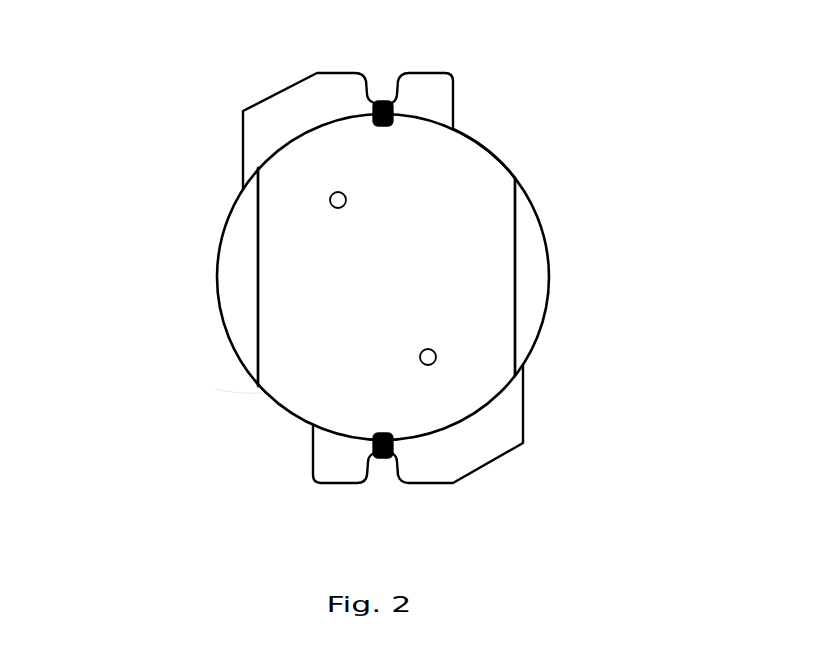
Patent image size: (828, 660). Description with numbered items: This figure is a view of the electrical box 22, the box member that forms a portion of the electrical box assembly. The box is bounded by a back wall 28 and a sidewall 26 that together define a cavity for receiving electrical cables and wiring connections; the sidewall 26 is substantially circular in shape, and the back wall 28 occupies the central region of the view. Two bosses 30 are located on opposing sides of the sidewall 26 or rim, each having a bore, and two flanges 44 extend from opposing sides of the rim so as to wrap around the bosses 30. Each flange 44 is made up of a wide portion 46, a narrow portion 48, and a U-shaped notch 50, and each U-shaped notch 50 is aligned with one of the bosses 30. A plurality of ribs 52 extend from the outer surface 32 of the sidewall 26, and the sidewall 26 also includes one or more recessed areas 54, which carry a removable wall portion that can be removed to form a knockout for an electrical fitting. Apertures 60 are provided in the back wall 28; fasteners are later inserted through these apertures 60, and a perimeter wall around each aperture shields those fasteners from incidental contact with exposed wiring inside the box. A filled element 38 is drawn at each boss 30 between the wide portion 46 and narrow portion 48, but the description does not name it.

The electrical box 22 is at (136, 183).
The sidewall 26 is at (512, 177).
The back wall 28 is at (376, 282).
The boss 30 is at (393, 98).
The outer surface 32 is at (545, 207).
The seal insert 38 is at (373, 101).
The flange 44 is at (333, 73).
The wide portion 46 is at (311, 124).
The narrow portion 48 is at (413, 112).
The U-shaped notch 50 is at (383, 85).
The rib 52 is at (502, 162).
The recessed area 54 is at (240, 270).
The aperture 60 is at (344, 194).